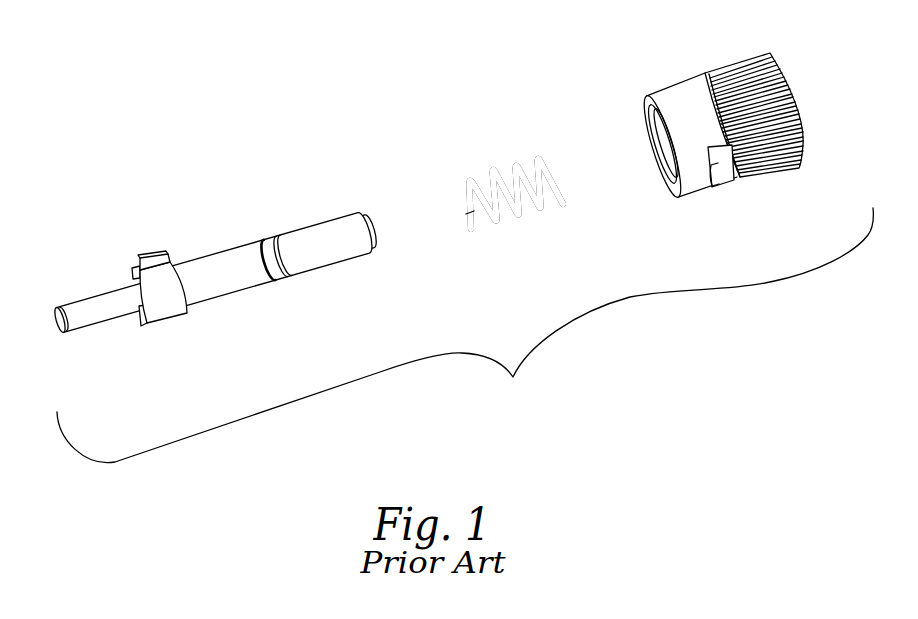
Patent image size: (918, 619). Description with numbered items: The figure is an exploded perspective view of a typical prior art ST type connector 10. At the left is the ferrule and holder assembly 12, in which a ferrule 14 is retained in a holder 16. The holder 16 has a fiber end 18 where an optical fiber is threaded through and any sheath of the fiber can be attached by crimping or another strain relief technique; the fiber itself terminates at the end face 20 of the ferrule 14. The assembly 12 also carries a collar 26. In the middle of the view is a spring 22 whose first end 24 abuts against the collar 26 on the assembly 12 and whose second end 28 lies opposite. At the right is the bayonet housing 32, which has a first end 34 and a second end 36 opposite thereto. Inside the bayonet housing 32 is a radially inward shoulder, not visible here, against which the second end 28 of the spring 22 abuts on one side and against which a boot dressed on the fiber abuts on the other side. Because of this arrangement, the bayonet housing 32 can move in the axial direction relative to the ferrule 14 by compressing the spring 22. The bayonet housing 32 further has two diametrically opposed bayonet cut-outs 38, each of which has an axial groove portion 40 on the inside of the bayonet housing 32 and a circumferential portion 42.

The ST type connector 10 is at (465, 335).
The ferrule and holder assembly 12 is at (213, 275).
The ferrule 14 is at (84, 329).
The holder 16 is at (243, 240).
The fiber end 18 is at (376, 232).
The end face 20 is at (50, 319).
The spring 22 is at (507, 198).
The first end 24 is at (468, 226).
The collar 26 is at (178, 259).
The second end 28 is at (548, 168).
The bayonet housing 32 is at (714, 131).
The first end 34 is at (668, 145).
The second end 36 is at (770, 165).
The bayonet cut-outs 38 is at (711, 203).
The axial groove portion 40 is at (657, 134).
The circumferential portion 42 is at (715, 182).